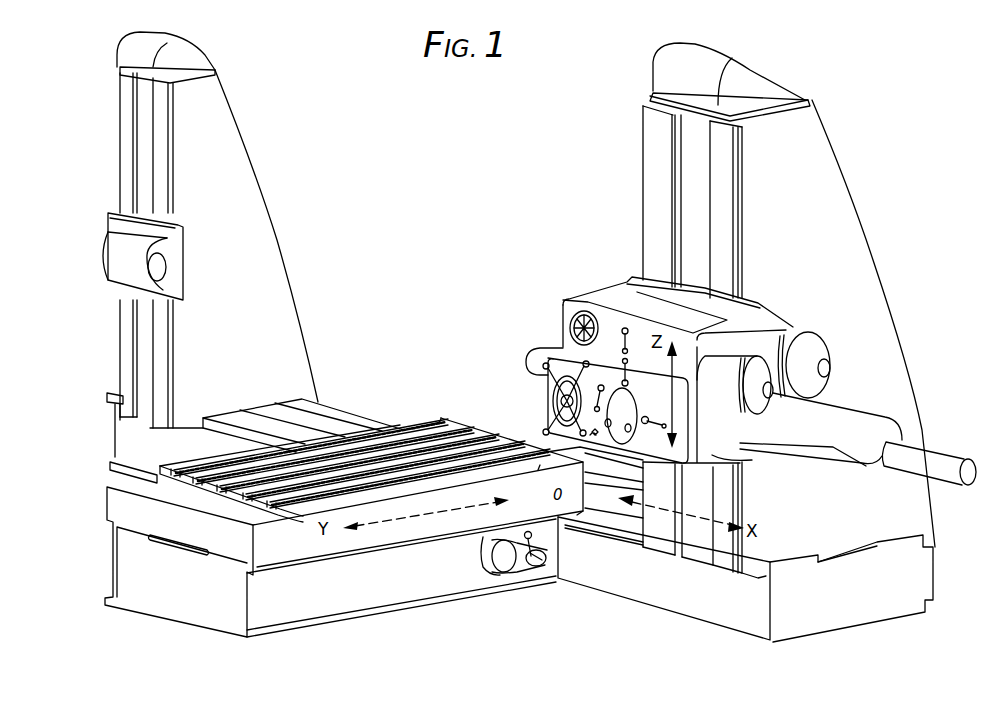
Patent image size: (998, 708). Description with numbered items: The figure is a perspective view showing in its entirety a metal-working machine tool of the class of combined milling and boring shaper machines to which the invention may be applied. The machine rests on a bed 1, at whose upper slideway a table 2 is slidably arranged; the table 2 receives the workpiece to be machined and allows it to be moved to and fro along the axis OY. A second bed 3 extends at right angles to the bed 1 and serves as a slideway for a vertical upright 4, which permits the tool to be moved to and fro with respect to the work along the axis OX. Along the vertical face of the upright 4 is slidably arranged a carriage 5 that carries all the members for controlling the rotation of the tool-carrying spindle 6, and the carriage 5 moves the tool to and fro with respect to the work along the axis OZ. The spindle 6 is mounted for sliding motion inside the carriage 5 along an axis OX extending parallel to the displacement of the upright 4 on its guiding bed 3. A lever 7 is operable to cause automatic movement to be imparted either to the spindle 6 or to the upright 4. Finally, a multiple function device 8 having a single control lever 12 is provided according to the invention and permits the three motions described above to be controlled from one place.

The bed 1 is at (213, 607).
The table 2 is at (289, 545).
The second bed 3 is at (800, 614).
The vertical upright 4 is at (922, 512).
The carriage 5 is at (757, 316).
The tool-carrying spindle 6 is at (534, 353).
The lever 7 is at (648, 428).
The multiple function device 8 is at (519, 563).
The control lever 12 is at (528, 563).